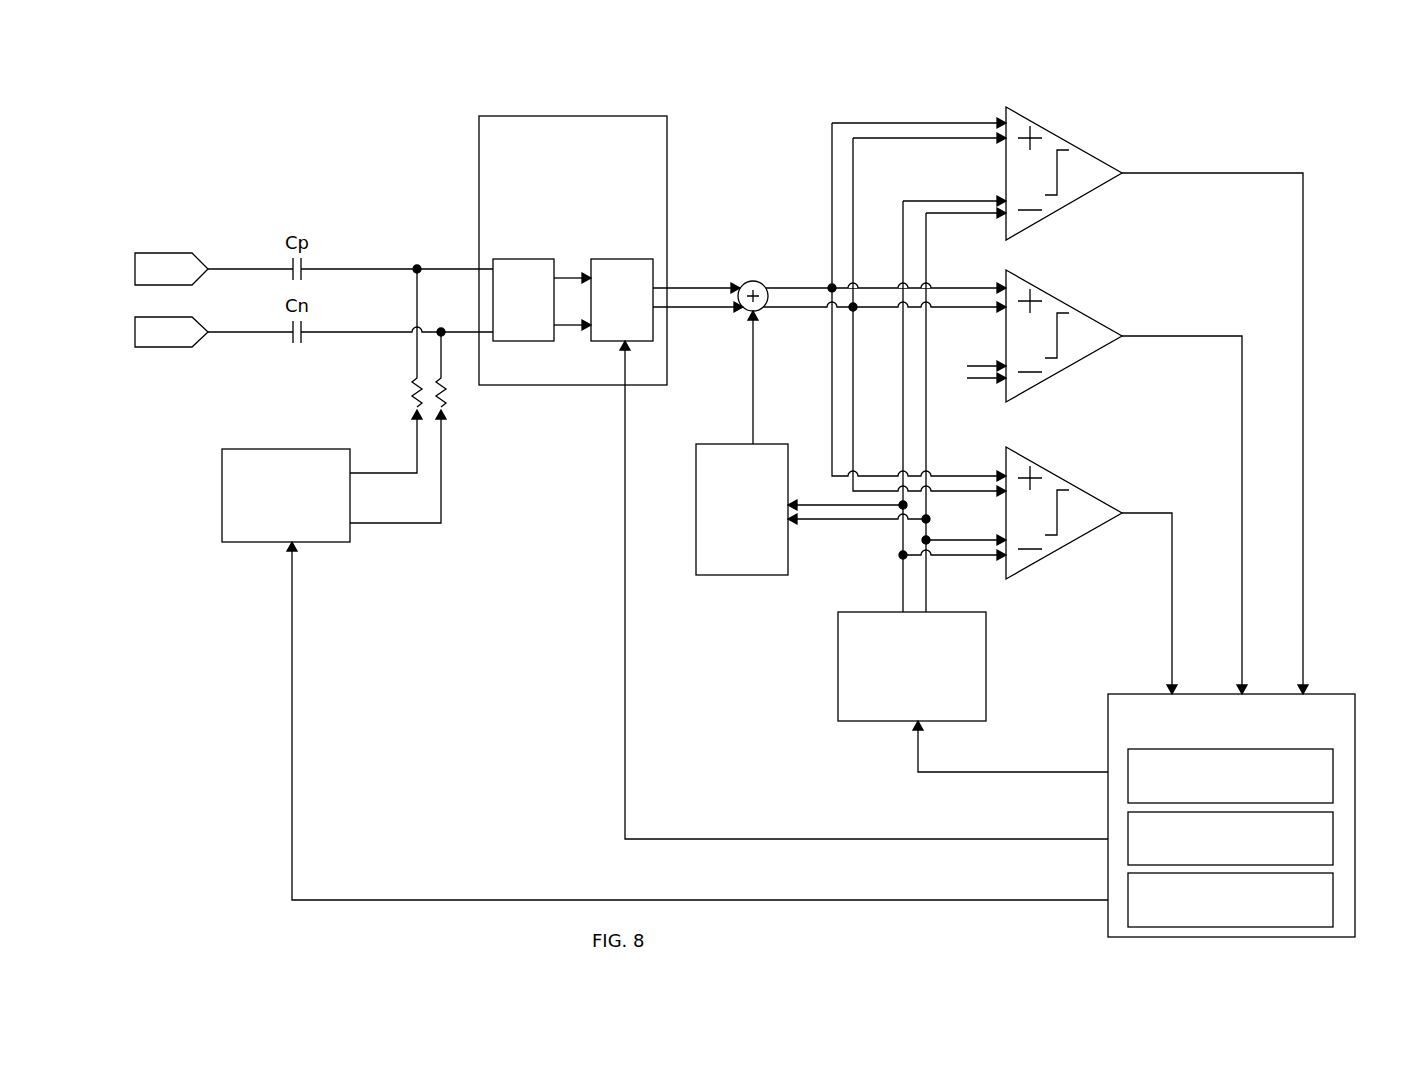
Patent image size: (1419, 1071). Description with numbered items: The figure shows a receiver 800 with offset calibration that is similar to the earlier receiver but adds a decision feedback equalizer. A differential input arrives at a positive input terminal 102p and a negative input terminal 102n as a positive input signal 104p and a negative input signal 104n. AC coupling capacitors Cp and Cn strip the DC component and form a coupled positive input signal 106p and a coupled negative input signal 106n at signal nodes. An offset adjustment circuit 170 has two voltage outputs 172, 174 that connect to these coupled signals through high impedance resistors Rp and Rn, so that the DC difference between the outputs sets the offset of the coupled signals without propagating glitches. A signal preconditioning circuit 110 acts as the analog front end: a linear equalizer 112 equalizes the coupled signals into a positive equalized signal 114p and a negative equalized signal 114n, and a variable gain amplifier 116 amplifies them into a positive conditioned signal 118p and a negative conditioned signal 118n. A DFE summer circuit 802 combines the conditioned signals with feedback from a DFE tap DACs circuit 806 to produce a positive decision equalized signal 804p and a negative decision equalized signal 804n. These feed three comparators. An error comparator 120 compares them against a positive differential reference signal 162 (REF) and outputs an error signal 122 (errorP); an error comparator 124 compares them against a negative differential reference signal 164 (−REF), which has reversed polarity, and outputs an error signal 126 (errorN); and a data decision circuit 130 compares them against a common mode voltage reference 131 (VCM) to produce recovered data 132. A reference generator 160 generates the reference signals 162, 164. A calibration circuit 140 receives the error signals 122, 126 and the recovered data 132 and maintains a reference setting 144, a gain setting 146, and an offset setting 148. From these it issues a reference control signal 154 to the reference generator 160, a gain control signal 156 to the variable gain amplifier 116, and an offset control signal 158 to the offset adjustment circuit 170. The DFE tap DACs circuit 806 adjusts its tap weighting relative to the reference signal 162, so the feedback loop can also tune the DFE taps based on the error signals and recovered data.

The receiver 800 is at (182, 131).
The positive input terminal 102p is at (171, 269).
The negative input terminal 102n is at (171, 332).
The positive input signal 104p is at (270, 262).
The negative input signal 104n is at (262, 346).
The coupled positive input signal 106p is at (397, 262).
The coupled negative input signal 106n is at (388, 332).
The signal preconditioning circuit 110 is at (573, 250).
The linear equalizer 112 is at (523, 300).
The positive equalized signal 114p is at (576, 262).
The negative equalized signal 114n is at (576, 338).
The variable gain amplifier 116 is at (622, 300).
The positive conditioned signal 118p is at (680, 282).
The negative conditioned signal 118n is at (680, 316).
The DFE summer circuit 802 is at (748, 278).
The positive decision equalized signal 804p is at (829, 283).
The negative decision equalized signal 804n is at (829, 312).
The DFE tap DACs circuit 806 is at (813, 443).
The error comparator 120 is at (1073, 130).
The error signal 122 is at (1215, 407).
The data decision circuit 130 is at (1073, 293).
The common mode voltage reference 131 is at (1000, 384).
The recovered data 132 is at (1184, 487).
The error comparator 124 is at (1073, 470).
The error signal 126 is at (1167, 578).
The positive differential reference signal 162 is at (972, 203).
The negative differential reference signal 164 is at (975, 563).
The reference generator 160 is at (912, 666).
The calibration circuit 140 is at (1231, 815).
The reference setting 144 is at (1230, 776).
The gain setting 146 is at (1230, 838).
The offset setting 148 is at (1230, 900).
The reference control signal 154 is at (1010, 761).
The gain control signal 156 is at (864, 602).
The offset control signal 158 is at (697, 733).
The offset adjustment circuit 170 is at (286, 495).
The voltage output 172 is at (414, 488).
The voltage output 174 is at (430, 536).